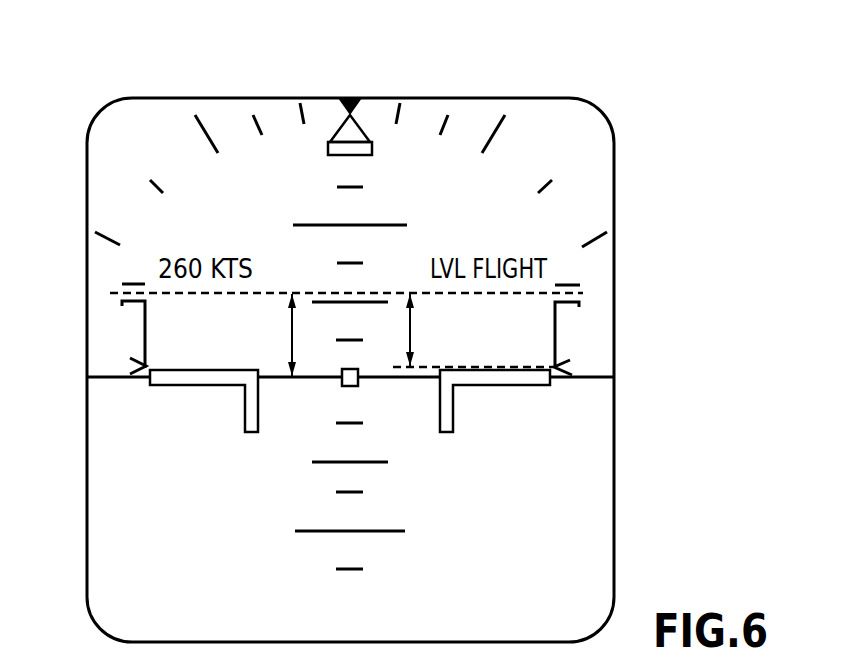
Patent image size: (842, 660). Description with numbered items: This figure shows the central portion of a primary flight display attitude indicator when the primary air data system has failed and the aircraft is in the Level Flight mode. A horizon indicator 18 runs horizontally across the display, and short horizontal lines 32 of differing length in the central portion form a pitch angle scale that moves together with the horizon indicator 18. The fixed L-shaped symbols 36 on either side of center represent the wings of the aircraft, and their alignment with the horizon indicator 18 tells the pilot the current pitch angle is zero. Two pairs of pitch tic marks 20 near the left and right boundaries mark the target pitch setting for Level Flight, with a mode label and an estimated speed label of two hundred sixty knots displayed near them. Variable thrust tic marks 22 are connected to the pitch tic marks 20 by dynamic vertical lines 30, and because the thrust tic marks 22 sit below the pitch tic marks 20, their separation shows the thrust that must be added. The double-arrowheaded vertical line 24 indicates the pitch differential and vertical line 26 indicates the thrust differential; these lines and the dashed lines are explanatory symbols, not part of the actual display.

The horizon indicator 18 is at (590, 379).
The pitch tic marks 20 is at (107, 291).
The variable thrust tic marks 22 is at (122, 366).
The vertical line 24 is at (278, 343).
The vertical line 26 is at (420, 333).
The dynamic vertical lines 30 is at (145, 332).
The short horizontal lines 32 is at (195, 520).
The L-shaped symbols 36 is at (163, 386).